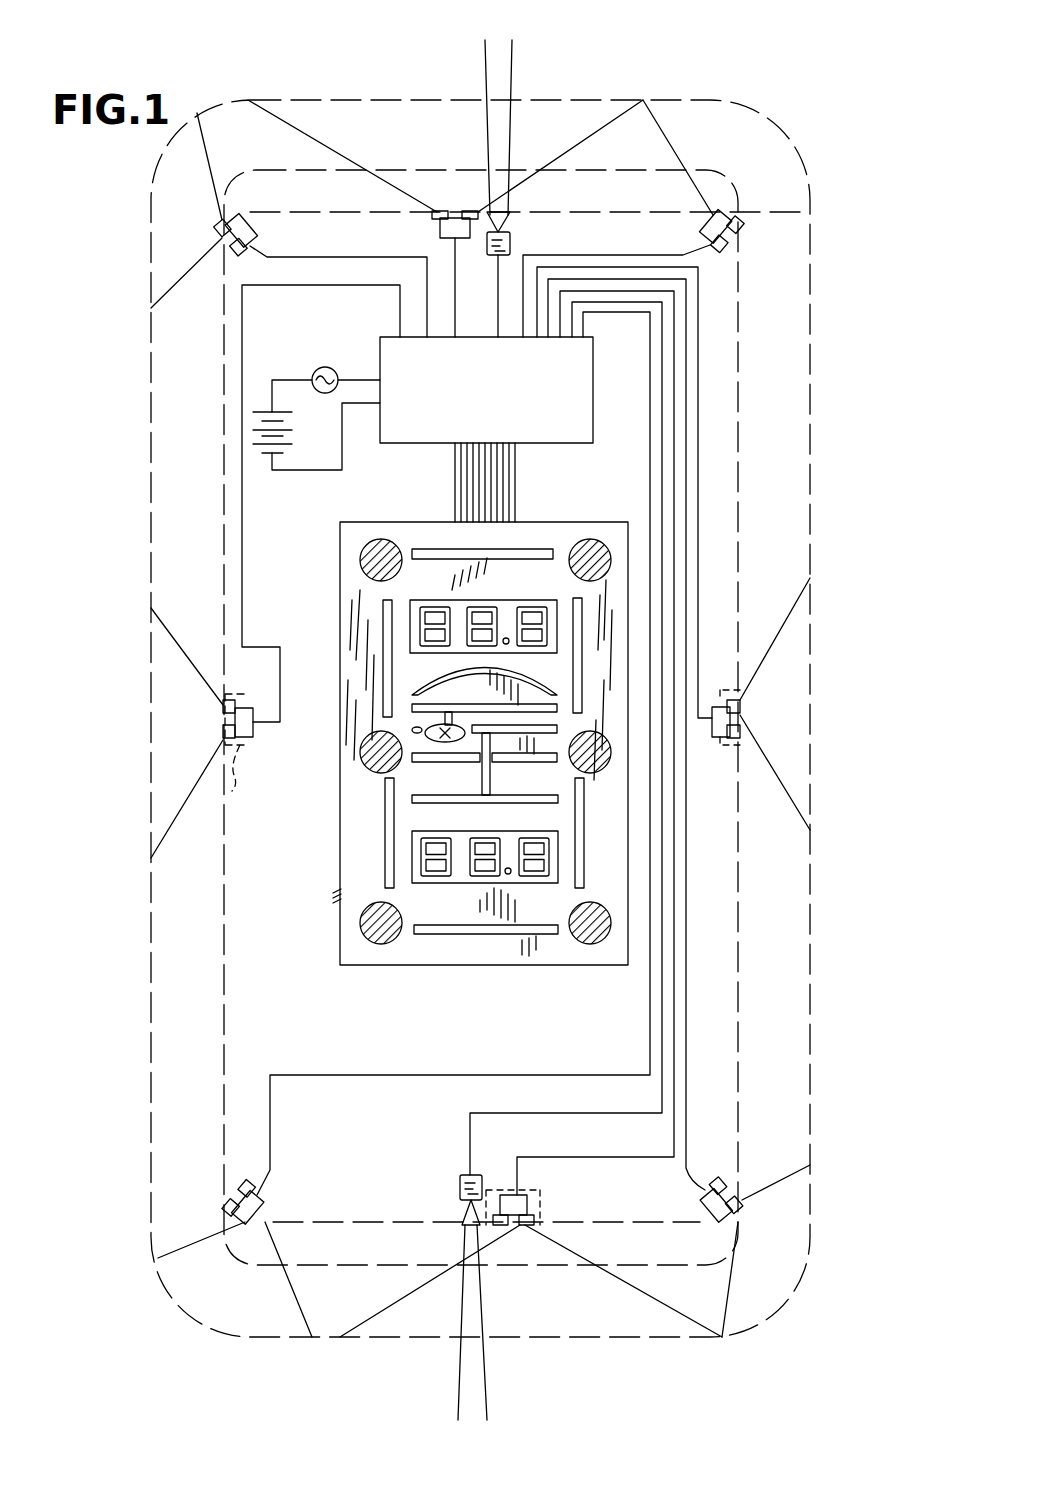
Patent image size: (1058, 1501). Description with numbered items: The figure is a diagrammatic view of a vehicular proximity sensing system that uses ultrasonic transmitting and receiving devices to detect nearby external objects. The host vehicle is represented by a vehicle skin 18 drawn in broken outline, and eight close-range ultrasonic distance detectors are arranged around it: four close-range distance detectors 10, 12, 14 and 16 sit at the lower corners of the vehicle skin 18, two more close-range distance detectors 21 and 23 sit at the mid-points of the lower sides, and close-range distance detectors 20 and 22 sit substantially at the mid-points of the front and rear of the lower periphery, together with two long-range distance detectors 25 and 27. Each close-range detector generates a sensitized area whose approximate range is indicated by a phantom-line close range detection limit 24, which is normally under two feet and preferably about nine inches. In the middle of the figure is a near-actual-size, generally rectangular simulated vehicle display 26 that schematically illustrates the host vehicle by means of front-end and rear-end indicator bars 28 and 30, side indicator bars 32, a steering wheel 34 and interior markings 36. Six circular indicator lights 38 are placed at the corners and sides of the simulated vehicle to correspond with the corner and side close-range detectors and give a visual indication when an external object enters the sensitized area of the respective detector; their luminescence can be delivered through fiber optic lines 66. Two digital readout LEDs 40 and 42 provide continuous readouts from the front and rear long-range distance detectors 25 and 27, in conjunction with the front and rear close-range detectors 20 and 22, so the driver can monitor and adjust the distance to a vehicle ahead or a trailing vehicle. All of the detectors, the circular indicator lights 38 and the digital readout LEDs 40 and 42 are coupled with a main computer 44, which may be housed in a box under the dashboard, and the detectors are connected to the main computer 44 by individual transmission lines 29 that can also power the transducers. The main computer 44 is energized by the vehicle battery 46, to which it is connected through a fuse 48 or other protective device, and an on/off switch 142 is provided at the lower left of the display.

The close-range distance detector 10 is at (270, 231).
The close-range distance detector 12 is at (720, 250).
The close-range distance detector 14 is at (728, 1180).
The close-range distance detector 16 is at (272, 1210).
The vehicle skin 18 is at (224, 574).
The close-range distance detector 20 is at (435, 235).
The close-range distance detector 21 is at (240, 800).
The close-range distance detector 22 is at (523, 1210).
The close-range distance detector 23 is at (738, 702).
The close range detection limit 24 is at (151, 674).
The long-range distance detector 25 is at (505, 222).
The simulated vehicle display 26 is at (512, 958).
The long-range distance detector 27 is at (470, 1208).
The front-end indicator bar 28 is at (434, 548).
The transmission lines 29 is at (634, 276).
The rear-end indicator bar 30 is at (460, 935).
The side indicator bars 32 is at (386, 616).
The steering wheel 34 is at (430, 728).
The interior markings 36 is at (426, 680).
The circular indicator lights 38 is at (360, 552).
The digital readout LED 40 is at (504, 618).
The digital readout LED 42 is at (462, 876).
The main computer 44 is at (380, 364).
The vehicle battery 46 is at (268, 460).
The fuse 48 is at (313, 372).
The fiber optic lines 66 is at (452, 476).
The on/off switch 142 is at (336, 896).